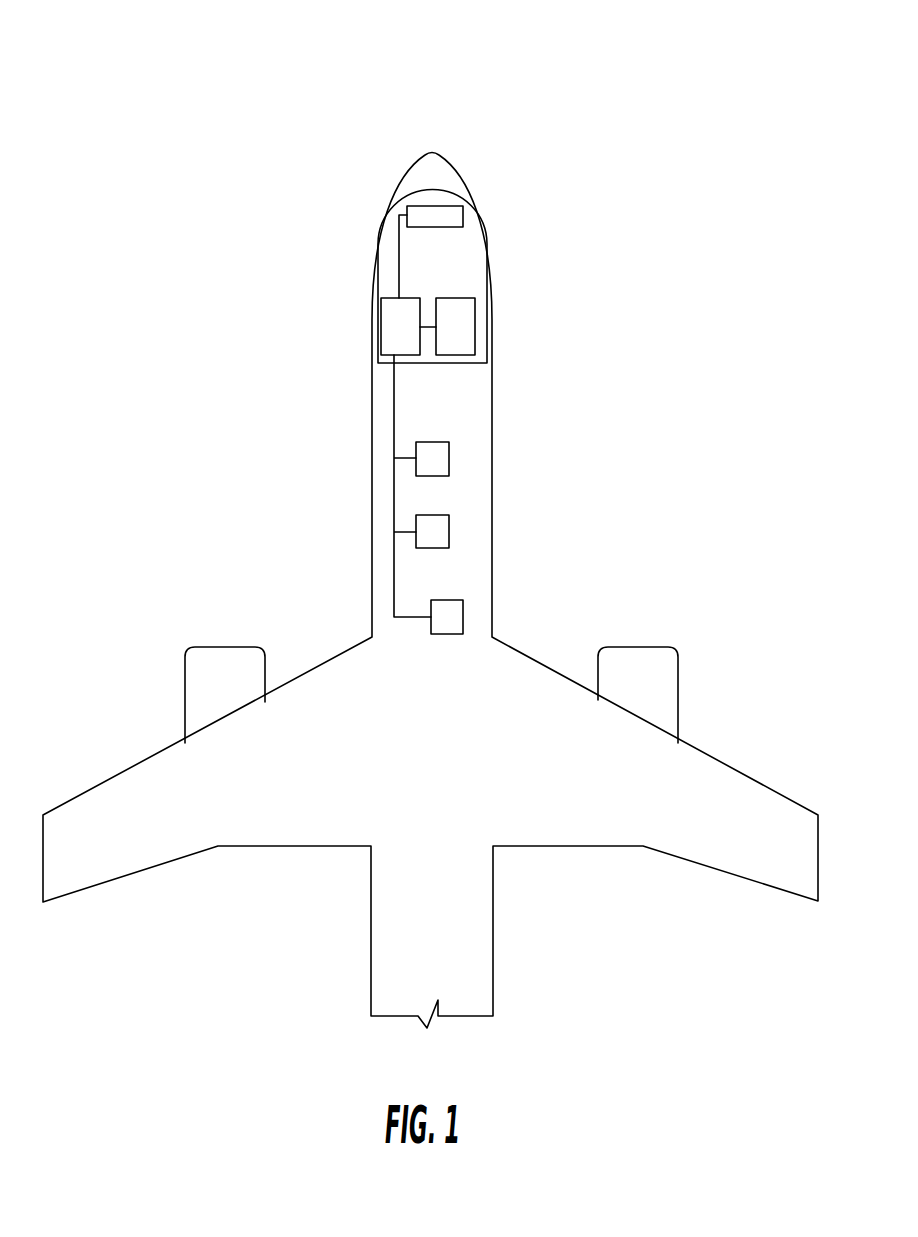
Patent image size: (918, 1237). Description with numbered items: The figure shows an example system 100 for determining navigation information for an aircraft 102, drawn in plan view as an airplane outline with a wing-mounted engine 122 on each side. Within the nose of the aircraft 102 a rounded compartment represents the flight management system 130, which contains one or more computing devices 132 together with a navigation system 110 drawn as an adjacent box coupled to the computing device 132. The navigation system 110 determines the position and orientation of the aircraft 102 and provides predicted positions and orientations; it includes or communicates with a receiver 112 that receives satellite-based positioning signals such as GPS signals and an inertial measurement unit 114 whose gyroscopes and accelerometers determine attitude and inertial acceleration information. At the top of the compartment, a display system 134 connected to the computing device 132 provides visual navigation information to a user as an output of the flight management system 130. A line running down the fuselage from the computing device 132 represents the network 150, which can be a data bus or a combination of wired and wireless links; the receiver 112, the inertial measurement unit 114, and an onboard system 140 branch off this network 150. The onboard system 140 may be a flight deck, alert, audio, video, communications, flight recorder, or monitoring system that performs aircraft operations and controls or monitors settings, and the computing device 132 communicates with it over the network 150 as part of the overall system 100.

The system 100 is at (208, 95).
The aircraft 102 is at (698, 295).
The navigation system 110 is at (458, 327).
The receiver 112 is at (442, 460).
The inertial measurement unit 114 is at (442, 533).
The engine 122 is at (227, 655).
The flight management system 130 is at (435, 198).
The computing device 132 is at (388, 330).
The display system 134 is at (443, 213).
The onboard system 140 is at (455, 613).
The network 150 is at (393, 483).